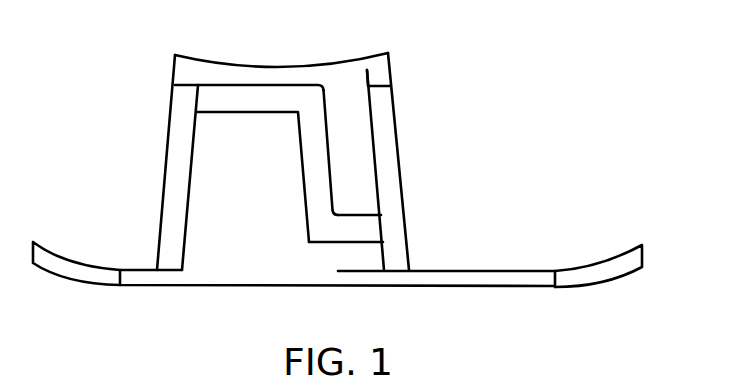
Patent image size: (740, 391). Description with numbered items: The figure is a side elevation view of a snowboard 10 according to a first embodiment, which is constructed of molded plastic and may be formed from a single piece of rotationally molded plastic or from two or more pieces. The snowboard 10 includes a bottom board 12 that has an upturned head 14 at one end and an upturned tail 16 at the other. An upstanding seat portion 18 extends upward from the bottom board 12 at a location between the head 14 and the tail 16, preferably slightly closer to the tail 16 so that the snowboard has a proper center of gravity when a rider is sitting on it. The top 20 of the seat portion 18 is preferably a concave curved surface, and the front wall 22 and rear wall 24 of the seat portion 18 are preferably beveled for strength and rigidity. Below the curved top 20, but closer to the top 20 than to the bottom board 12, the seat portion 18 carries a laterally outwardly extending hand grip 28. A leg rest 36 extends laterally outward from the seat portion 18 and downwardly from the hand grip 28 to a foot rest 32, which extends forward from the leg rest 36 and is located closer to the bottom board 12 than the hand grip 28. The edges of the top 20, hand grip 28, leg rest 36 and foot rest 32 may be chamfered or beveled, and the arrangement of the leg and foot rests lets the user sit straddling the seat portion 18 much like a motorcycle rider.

The snowboard 10 is at (560, 117).
The bottom board 12 is at (458, 286).
The upturned head 14 is at (627, 272).
The upturned tail 16 is at (58, 265).
The seat portion 18 is at (142, 162).
The top 20 is at (270, 65).
The front wall 22 is at (388, 165).
The rear wall 24 is at (168, 123).
The hand grip 28 is at (235, 105).
The foot rest 32 is at (364, 230).
The leg rest 36 is at (325, 163).